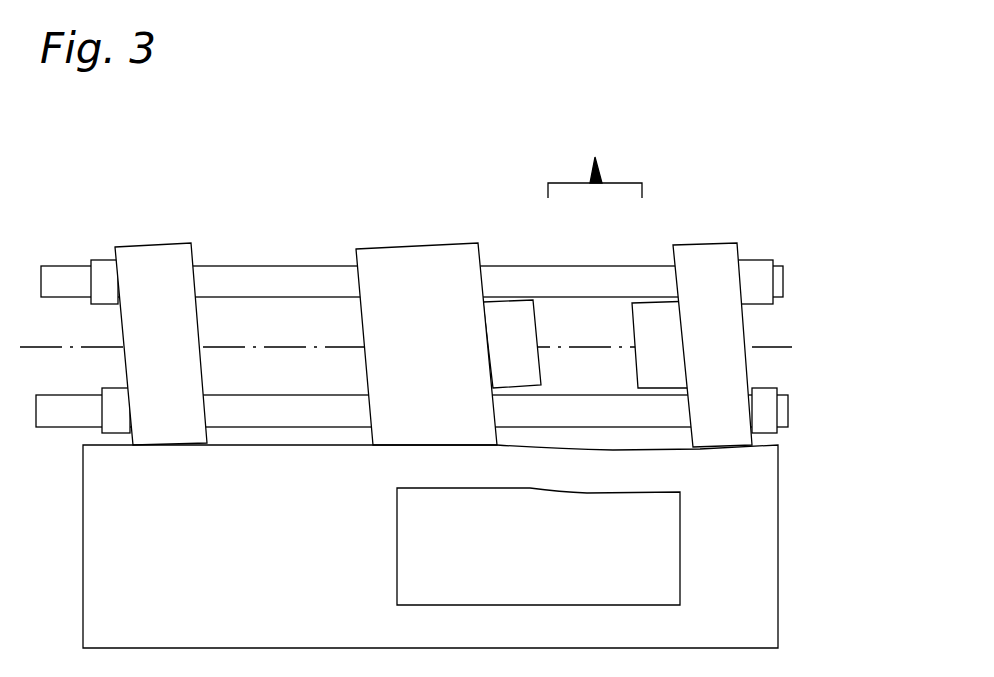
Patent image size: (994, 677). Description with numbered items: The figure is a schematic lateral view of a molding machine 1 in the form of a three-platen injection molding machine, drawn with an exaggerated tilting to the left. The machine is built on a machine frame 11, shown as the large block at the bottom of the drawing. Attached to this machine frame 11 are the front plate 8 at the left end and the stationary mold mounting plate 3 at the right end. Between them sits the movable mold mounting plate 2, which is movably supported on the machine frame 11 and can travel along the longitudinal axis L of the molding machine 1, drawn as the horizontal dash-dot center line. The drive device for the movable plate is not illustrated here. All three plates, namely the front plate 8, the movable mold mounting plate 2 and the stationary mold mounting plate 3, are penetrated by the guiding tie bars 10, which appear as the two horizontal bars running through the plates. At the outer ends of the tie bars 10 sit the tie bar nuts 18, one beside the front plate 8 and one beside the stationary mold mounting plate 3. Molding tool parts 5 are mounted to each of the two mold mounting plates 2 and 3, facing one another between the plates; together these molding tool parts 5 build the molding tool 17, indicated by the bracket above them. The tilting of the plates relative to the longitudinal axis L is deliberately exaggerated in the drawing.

The molding machine 1 is at (722, 145).
The movable mold mounting plate 2 is at (407, 280).
The stationary mold mounting plate 3 is at (715, 323).
The molding tool parts 5 is at (512, 323).
The front plate 8 is at (143, 277).
The guiding tie bars 10 is at (283, 408).
The machine frame 11 is at (750, 575).
The molding tool 17 is at (595, 159).
The tie bar nuts 18 is at (752, 280).
The longitudinal axis L is at (267, 343).